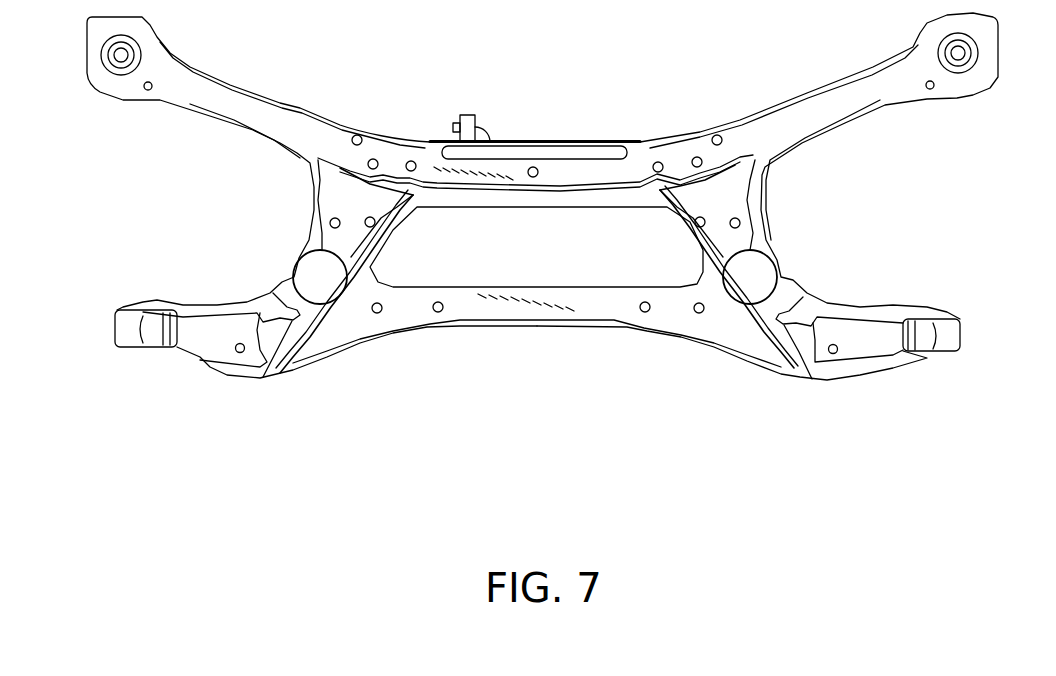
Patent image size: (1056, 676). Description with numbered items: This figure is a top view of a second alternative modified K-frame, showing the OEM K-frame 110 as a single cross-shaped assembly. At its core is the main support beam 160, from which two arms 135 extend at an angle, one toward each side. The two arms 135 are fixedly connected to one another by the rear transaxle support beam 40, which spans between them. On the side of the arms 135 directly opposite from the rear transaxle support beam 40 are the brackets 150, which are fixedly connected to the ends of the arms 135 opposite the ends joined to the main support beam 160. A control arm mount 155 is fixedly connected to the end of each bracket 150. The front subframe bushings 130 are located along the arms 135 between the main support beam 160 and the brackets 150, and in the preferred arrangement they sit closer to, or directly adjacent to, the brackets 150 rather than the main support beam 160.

The OEM K-frame 110 is at (613, 88).
The main support beam 160 is at (503, 167).
The arms 135 is at (303, 210).
The front subframe bushings 130 is at (313, 276).
The rear transaxle support beam 40 is at (474, 307).
The brackets 150 is at (202, 340).
The control arm mounts 155 is at (115, 322).